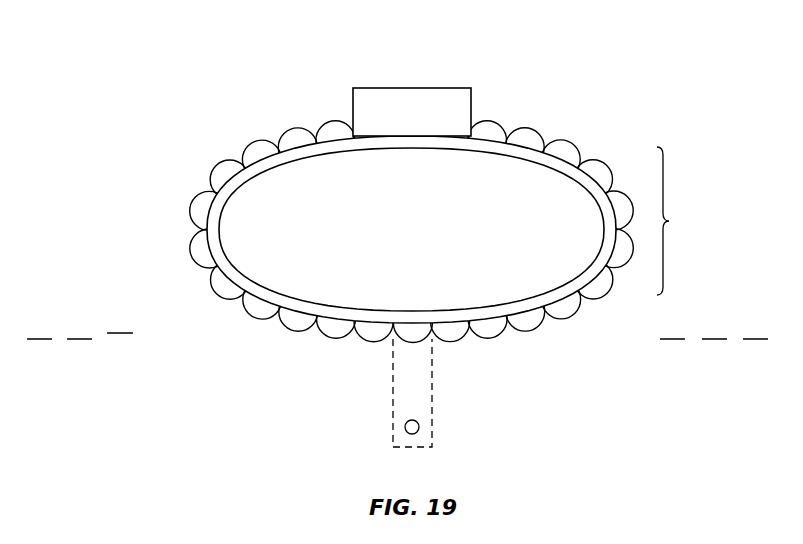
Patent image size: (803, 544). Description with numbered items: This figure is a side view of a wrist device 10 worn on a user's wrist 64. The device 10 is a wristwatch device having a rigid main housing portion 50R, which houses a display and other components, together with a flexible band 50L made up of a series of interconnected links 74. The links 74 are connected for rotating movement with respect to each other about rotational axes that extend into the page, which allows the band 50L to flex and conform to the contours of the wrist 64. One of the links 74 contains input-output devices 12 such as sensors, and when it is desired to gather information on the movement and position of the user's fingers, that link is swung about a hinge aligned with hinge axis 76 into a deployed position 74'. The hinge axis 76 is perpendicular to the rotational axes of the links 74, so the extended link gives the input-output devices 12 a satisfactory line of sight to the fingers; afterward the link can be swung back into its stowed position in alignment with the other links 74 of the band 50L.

The device 10 is at (618, 62).
The input-output devices 12 is at (419, 427).
The rigid main housing portion 50R is at (412, 98).
The flexible band 50L is at (683, 221).
The wrist 64 is at (338, 150).
The links 74 is at (367, 230).
The deployed position 74' is at (447, 393).
The hinge axis 76 is at (80, 341).